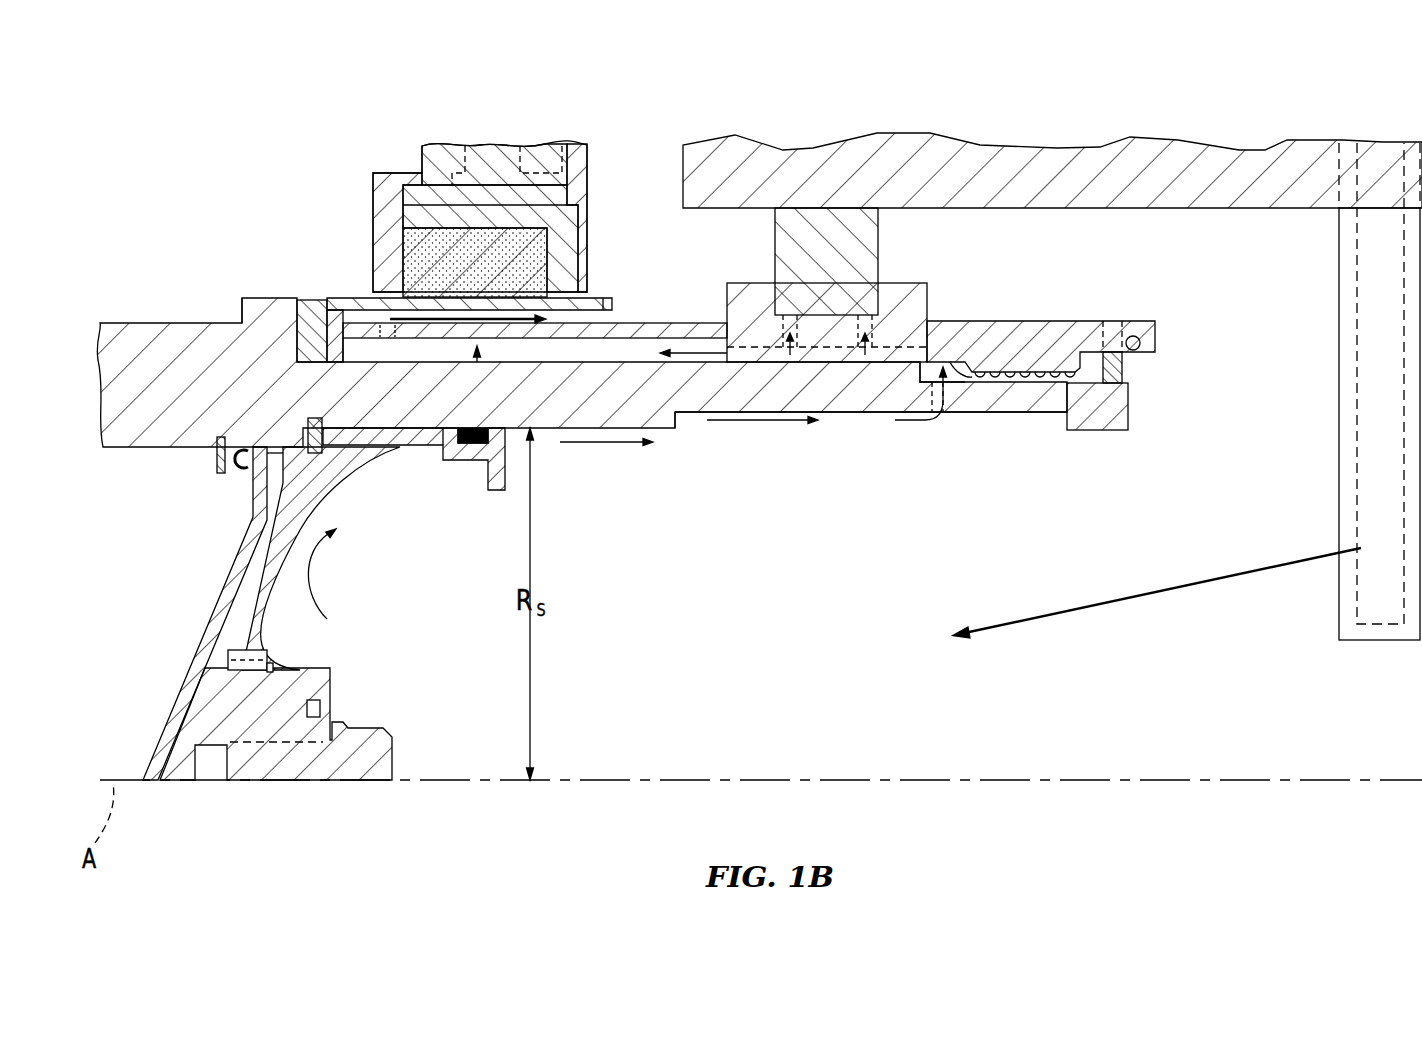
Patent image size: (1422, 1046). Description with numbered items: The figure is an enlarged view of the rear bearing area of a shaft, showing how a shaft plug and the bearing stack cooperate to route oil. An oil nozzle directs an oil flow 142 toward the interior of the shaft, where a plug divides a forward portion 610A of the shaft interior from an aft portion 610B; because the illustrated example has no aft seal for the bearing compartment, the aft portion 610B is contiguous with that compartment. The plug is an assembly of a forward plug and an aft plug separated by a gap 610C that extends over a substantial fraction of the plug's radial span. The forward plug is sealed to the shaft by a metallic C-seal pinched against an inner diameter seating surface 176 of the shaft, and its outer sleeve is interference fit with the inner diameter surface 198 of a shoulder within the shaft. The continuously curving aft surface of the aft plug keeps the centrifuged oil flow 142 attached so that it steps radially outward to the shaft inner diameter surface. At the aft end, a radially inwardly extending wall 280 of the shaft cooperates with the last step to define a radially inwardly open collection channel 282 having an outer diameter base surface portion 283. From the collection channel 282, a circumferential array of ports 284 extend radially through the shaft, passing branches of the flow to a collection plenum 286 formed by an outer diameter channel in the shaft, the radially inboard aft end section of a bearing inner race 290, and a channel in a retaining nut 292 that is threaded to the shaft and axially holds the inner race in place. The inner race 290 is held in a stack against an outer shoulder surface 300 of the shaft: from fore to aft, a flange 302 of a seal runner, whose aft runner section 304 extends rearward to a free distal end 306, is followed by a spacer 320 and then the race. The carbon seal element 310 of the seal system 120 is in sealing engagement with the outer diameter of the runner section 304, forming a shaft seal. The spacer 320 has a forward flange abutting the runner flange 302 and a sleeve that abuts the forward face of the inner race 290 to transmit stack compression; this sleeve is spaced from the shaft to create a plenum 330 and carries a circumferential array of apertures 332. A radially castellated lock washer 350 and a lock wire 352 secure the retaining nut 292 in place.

The seal system 120 is at (340, 178).
The oil flow 142 is at (1008, 633).
The ID seating surface of the shaft 176 is at (231, 478).
The ID surface of a shoulder within the shaft 198 is at (268, 445).
The radially inwardly extending wall 280 is at (1083, 431).
The collection channel 282 is at (1004, 434).
The outer diameter base surface portion 283 is at (850, 414).
The ports 284 is at (962, 420).
The collection plenum 286 is at (960, 352).
The bearing inner race 290 is at (918, 287).
The retaining nut 292 is at (1045, 347).
The outer shoulder surface 300 is at (307, 347).
The flange of seal runner 302 is at (303, 347).
The aft runner section 304 is at (596, 303).
The free distal end 306 is at (612, 306).
The carbon seal element 310 is at (527, 255).
The spacer 320 is at (475, 365).
The plenum 330 is at (601, 359).
The apertures 332 is at (393, 340).
The lock washer 350 is at (1125, 368).
The lock wire 352 is at (1142, 345).
The forward portion of the shaft interior 610A is at (120, 561).
The aft portion of the shaft interior 610B is at (775, 741).
The gap 610C is at (236, 592).